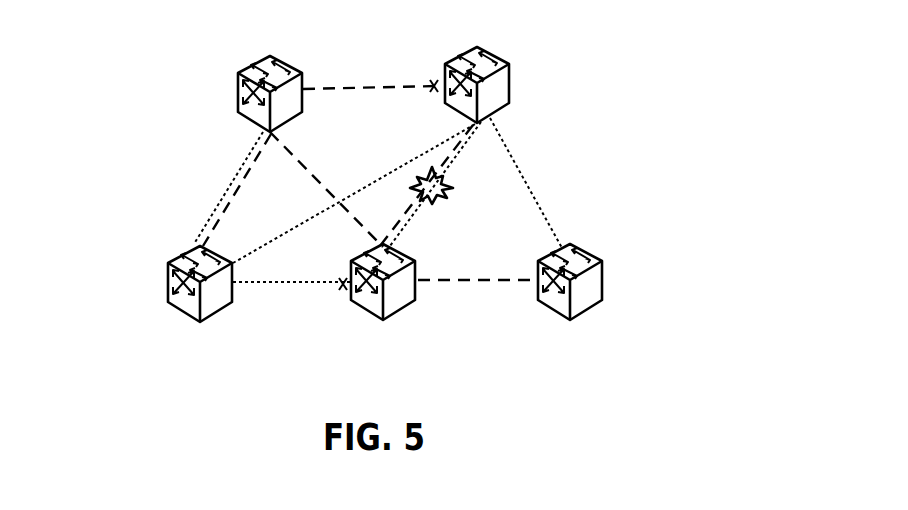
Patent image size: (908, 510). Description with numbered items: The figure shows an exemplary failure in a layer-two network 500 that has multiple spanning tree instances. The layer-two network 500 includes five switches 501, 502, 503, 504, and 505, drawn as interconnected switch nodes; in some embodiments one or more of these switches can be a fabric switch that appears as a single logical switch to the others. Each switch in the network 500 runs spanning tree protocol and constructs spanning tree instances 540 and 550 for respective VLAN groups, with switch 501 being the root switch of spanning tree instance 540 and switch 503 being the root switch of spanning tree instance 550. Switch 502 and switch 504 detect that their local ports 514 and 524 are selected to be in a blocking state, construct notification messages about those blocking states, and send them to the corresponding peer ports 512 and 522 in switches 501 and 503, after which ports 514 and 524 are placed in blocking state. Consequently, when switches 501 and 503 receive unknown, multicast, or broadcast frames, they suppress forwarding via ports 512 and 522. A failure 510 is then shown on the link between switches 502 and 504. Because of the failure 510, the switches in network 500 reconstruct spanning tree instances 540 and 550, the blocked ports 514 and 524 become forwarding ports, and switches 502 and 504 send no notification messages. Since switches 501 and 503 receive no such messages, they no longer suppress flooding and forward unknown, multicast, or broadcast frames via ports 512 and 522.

The layer-2 network 500 is at (653, 307).
The switch 501 is at (240, 114).
The switch 502 is at (509, 87).
The switch 503 is at (178, 310).
The switch 504 is at (408, 305).
The switch 505 is at (547, 310).
The failure 510 is at (446, 193).
The peer port 512 is at (305, 88).
The local port 514 is at (436, 84).
The peer port 522 is at (238, 283).
The local port 524 is at (342, 288).
The spanning tree instance 540 is at (254, 162).
The spanning tree instance 550 is at (520, 172).